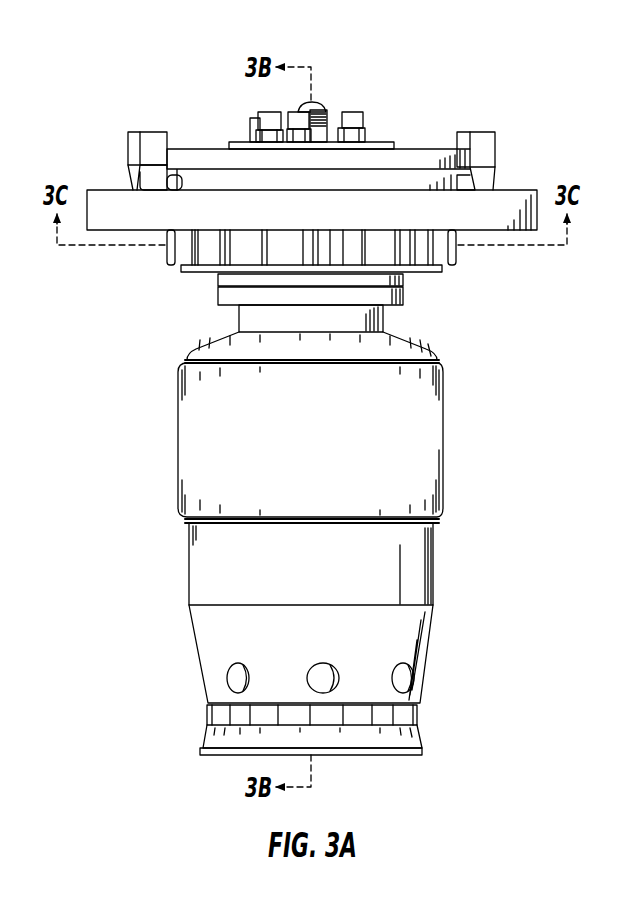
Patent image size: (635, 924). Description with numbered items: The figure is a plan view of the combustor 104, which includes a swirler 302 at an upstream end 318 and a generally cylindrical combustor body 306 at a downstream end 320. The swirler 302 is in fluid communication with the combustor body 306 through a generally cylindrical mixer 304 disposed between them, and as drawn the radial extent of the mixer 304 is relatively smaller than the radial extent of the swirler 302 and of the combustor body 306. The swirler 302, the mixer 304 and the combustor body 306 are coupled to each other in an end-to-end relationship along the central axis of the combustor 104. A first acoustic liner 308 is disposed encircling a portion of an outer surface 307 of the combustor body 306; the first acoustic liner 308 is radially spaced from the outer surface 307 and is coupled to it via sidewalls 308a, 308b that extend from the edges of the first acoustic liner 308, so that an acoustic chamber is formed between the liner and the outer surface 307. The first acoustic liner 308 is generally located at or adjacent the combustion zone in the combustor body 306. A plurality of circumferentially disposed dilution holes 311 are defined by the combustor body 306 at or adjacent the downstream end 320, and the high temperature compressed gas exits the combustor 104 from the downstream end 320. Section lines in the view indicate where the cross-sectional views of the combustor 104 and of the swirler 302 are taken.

The combustor 104 is at (530, 92).
The swirler 302 is at (208, 253).
The mixer 304 is at (239, 325).
The combustor body 306 is at (419, 587).
The outer surface 307 is at (434, 555).
The first acoustic liner 308 is at (444, 440).
The sidewall 308a is at (438, 362).
The sidewall 308b is at (438, 522).
The dilution holes 311 is at (404, 680).
The upstream end 318 is at (430, 311).
The downstream end 320 is at (436, 645).